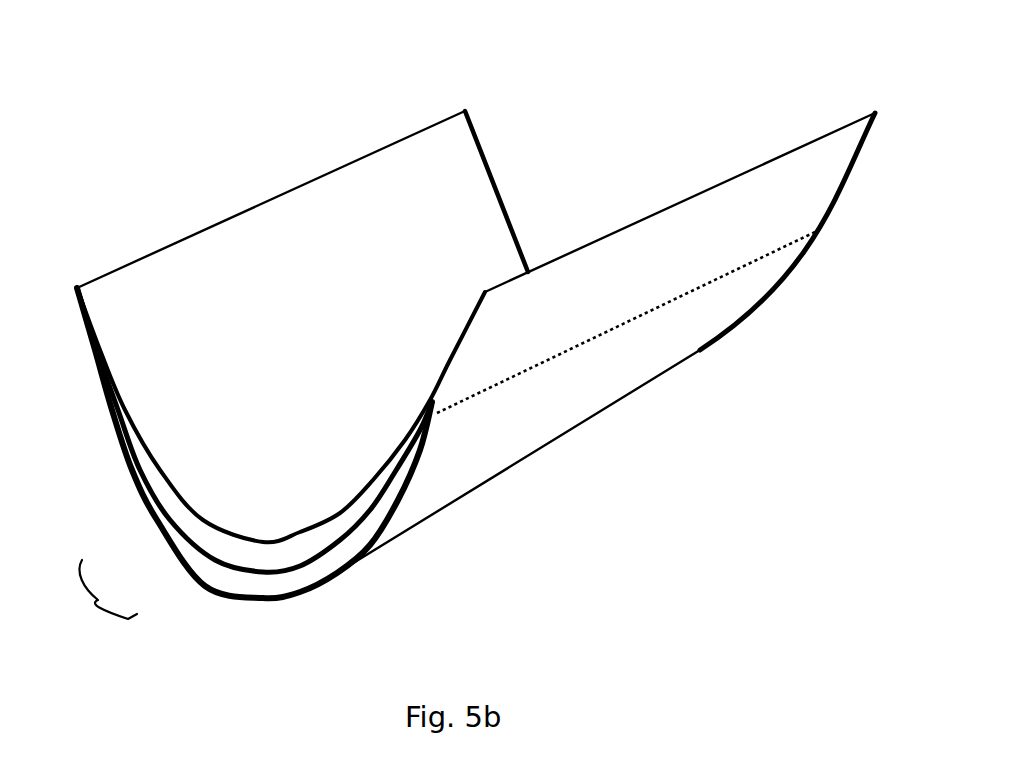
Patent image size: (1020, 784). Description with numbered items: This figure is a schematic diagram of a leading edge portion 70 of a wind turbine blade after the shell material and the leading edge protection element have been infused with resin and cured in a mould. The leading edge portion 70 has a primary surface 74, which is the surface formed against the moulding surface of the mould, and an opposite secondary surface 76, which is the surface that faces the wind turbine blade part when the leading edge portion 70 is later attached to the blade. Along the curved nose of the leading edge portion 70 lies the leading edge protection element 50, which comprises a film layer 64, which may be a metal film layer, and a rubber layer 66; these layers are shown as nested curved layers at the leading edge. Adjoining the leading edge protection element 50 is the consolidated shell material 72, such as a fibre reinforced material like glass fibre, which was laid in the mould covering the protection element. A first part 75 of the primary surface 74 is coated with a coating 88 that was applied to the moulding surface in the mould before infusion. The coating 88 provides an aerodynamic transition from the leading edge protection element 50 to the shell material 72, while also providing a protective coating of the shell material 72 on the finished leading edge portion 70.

The leading edge portion 70 is at (180, 160).
The secondary surface 76 is at (478, 211).
The coating 88 is at (705, 218).
The first part of the primary surface 75 is at (870, 205).
The primary surface 74 is at (667, 345).
The shell material 72 is at (342, 522).
The rubber layer 66 is at (198, 562).
The film layer 64 is at (197, 578).
The leading edge protection element 50 is at (99, 601).